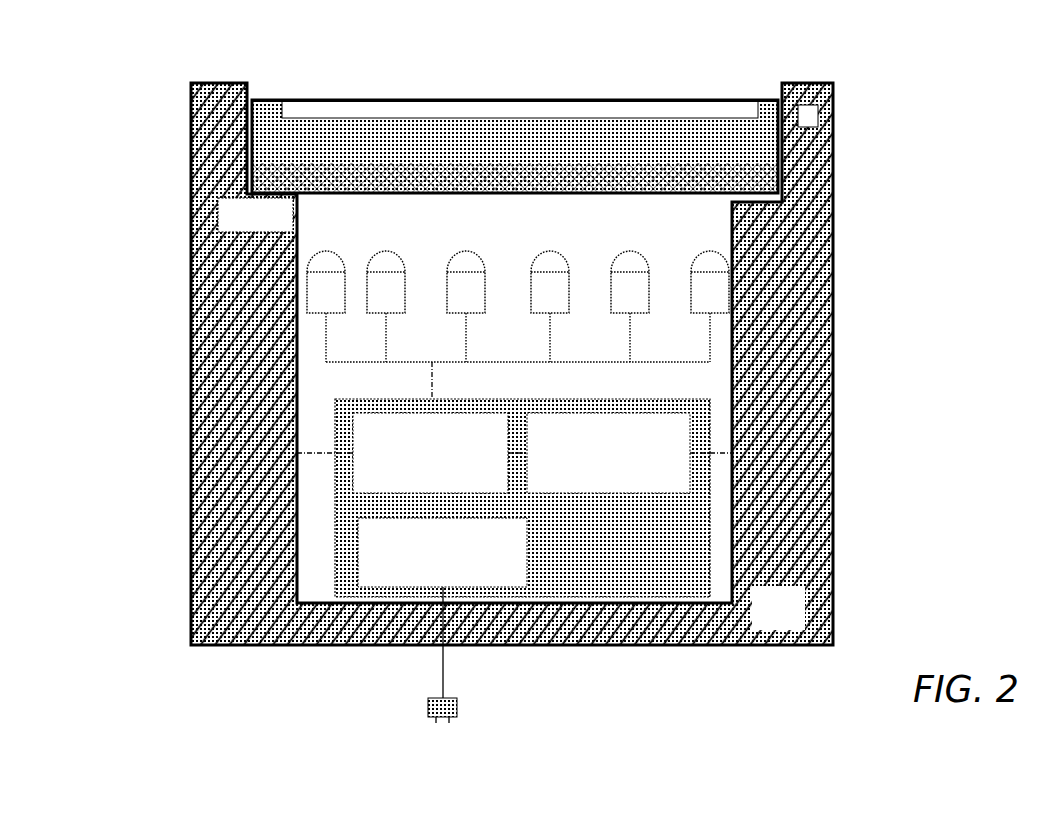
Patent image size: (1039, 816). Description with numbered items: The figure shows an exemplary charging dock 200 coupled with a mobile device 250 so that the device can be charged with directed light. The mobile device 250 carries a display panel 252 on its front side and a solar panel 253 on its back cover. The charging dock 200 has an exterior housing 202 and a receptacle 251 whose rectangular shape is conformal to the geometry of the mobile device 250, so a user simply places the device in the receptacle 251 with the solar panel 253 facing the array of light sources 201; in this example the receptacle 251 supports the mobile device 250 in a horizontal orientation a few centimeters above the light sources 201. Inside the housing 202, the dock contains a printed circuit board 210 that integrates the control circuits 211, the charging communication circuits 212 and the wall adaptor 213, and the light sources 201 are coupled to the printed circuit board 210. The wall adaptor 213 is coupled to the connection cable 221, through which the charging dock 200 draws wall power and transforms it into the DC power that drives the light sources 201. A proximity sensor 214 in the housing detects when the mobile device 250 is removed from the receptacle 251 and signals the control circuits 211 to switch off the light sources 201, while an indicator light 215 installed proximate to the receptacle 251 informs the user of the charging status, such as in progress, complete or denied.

The charging dock 200 is at (512, 364).
The light sources 201 is at (328, 263).
The exterior housing 202 is at (835, 425).
The printed circuit board 210 is at (514, 498).
The control circuits 211 is at (430, 453).
The charging communication circuits 212 is at (608, 453).
The wall adaptor 213 is at (442, 552).
The proximity sensor 214 is at (191, 197).
The indicator light 215 is at (838, 137).
The connection cable 221 is at (443, 670).
The mobile device 250 is at (267, 100).
The receptacle 251 is at (598, 95).
The display panel 252 is at (387, 108).
The solar panel 253 is at (367, 175).